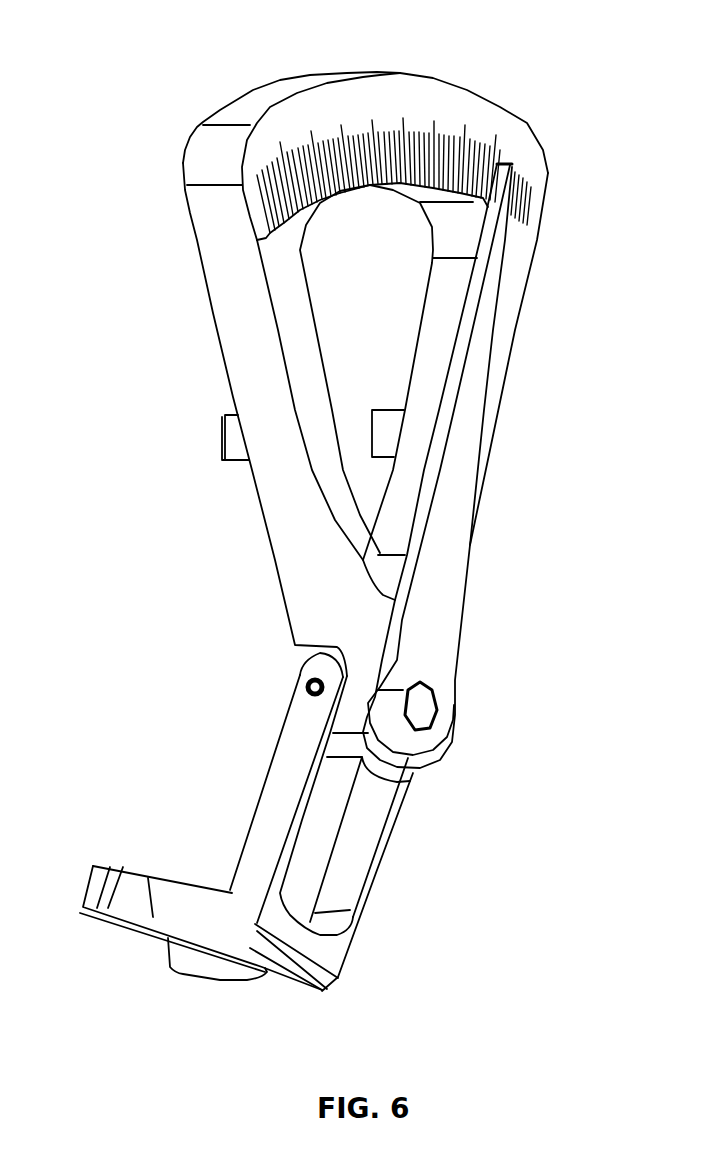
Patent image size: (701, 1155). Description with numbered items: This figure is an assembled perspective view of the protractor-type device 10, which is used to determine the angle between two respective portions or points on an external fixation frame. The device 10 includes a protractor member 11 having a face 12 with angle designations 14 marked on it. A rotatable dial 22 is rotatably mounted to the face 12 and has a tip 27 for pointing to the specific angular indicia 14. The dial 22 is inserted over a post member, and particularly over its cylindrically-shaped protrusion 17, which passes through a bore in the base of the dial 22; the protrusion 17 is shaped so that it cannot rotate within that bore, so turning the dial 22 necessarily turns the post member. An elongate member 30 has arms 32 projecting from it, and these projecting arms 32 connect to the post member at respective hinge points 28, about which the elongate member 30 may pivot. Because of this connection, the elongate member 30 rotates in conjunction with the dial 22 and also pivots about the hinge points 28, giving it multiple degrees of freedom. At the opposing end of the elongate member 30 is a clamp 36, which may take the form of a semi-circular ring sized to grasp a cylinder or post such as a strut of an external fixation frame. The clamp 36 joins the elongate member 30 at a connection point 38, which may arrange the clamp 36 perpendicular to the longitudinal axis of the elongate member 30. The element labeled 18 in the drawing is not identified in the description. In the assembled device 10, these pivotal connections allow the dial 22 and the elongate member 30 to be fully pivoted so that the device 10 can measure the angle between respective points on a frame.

The device 10 is at (136, 46).
The protractor member 11 is at (293, 305).
The face 12 is at (433, 90).
The angle designations 14 is at (453, 140).
The cylindrically-shaped protrusion 17 is at (420, 710).
The tabs / stops 18 is at (387, 423).
The rotatable dial 22 is at (445, 565).
The tip 27 is at (508, 165).
The hinge points 28 is at (310, 688).
The elongate member 30 is at (340, 950).
The arms 32 is at (280, 770).
The clamp 36 is at (145, 880).
The connection point 38 is at (223, 923).